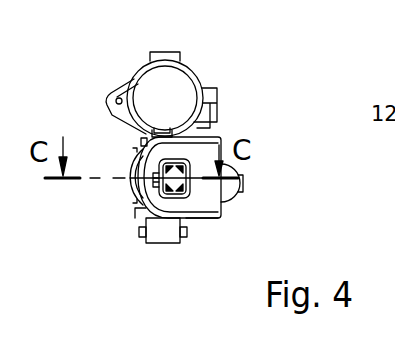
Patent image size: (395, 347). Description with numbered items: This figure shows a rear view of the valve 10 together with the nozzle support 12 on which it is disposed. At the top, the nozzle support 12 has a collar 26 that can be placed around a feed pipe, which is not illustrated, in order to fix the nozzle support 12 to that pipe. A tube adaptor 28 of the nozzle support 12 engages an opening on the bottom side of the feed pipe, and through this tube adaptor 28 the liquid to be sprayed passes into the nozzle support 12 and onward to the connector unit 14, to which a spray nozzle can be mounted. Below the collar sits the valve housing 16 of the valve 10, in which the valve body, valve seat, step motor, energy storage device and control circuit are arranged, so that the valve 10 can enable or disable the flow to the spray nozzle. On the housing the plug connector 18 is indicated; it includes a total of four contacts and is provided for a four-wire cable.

The valve 10 is at (234, 136).
The nozzle support 12 is at (200, 63).
The connector unit 14 is at (165, 238).
The valve housing 16 is at (203, 220).
The plug connector 18 is at (184, 183).
The collar 26 is at (133, 82).
The tube adaptor 28 is at (172, 128).